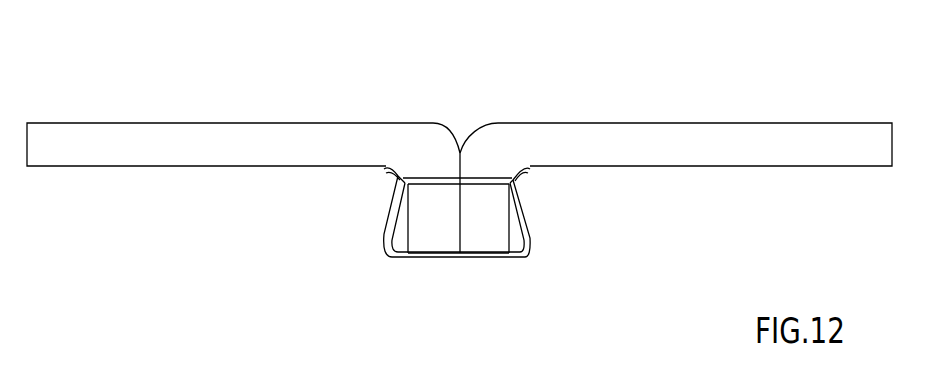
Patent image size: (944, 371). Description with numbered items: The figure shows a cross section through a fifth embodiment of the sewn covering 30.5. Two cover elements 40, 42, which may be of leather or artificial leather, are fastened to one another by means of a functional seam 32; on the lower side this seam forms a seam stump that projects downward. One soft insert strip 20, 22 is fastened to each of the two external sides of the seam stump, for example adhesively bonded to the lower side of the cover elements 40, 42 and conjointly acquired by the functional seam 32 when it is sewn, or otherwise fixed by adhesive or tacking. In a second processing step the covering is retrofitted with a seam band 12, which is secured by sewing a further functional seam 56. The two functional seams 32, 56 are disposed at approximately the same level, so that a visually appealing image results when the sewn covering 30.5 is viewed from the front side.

The sewn covering 30.5 is at (72, 108).
The cover element 42 is at (175, 148).
The soft insert strip 20 is at (400, 236).
The functional seam 32 is at (445, 185).
The further functional seam 56 is at (488, 174).
The soft insert strip 22 is at (517, 228).
The seam band 12 is at (530, 238).
The cover element 40 is at (697, 144).